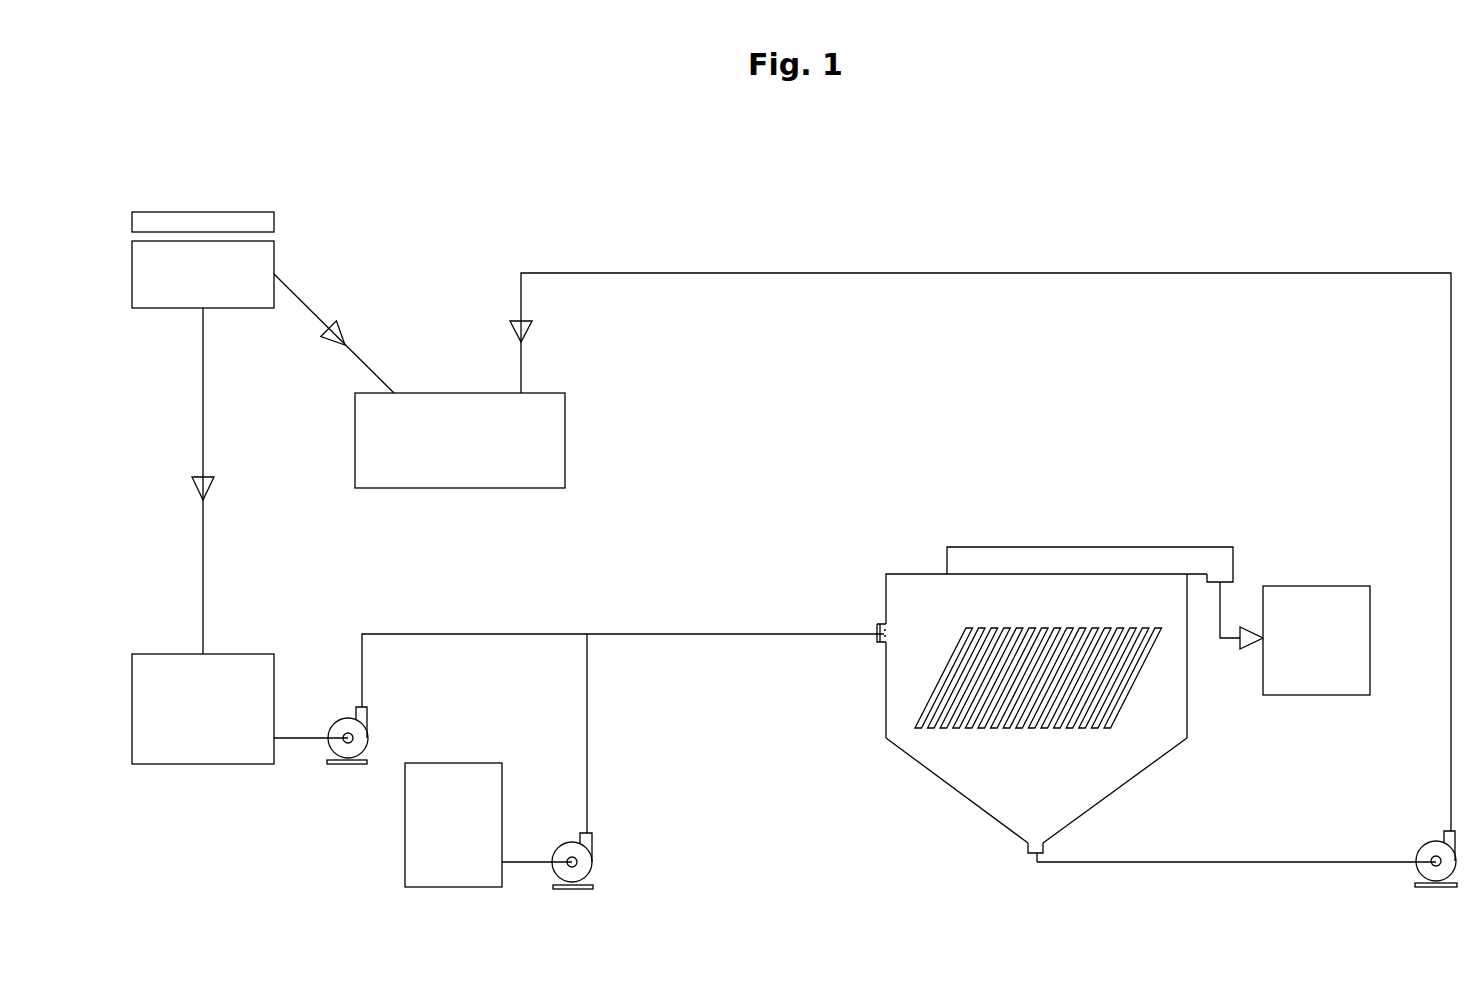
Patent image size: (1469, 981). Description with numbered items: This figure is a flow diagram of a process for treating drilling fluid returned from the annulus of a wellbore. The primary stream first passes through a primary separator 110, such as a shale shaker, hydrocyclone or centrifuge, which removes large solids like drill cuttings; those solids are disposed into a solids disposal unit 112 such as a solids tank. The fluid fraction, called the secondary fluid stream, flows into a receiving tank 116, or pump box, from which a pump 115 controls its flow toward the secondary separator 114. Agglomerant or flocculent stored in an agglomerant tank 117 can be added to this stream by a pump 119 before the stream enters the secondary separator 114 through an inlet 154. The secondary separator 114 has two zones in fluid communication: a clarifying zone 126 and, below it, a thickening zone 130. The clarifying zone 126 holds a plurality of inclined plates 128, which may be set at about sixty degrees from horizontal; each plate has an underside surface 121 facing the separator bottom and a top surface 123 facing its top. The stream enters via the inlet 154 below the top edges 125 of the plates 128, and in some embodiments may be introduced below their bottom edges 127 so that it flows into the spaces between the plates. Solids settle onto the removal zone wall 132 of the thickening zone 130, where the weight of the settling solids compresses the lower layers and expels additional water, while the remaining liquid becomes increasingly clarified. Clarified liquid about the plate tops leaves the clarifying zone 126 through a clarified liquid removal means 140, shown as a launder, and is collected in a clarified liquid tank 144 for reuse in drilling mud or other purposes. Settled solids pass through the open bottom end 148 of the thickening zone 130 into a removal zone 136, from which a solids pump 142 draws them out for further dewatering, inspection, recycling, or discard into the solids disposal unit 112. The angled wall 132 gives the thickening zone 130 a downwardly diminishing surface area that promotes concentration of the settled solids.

The primary separator 110 is at (275, 248).
The solids disposal unit 112 is at (565, 438).
The secondary separator 114 is at (905, 573).
The pump 115 is at (347, 766).
The receiving tank 116 is at (274, 652).
The agglomerant tank 117 is at (500, 762).
The pump 119 is at (594, 860).
The underside surfaces 121 is at (1180, 747).
The top surfaces 123 is at (1138, 630).
The top edges 125 is at (965, 630).
The clarifying zone 126 is at (903, 672).
The bottom edges 127 is at (925, 723).
The inclined plates 128 is at (1120, 686).
The thickening zone 130 is at (1037, 760).
The removal zone wall 132 is at (955, 793).
The removal zone 136 is at (1045, 845).
The clarified liquid removal means 140 is at (1233, 547).
The solids pump 142 is at (1420, 845).
The clarified liquid tank 144 is at (1370, 586).
The open bottom end 148 is at (1033, 857).
The inlet 154 is at (878, 622).